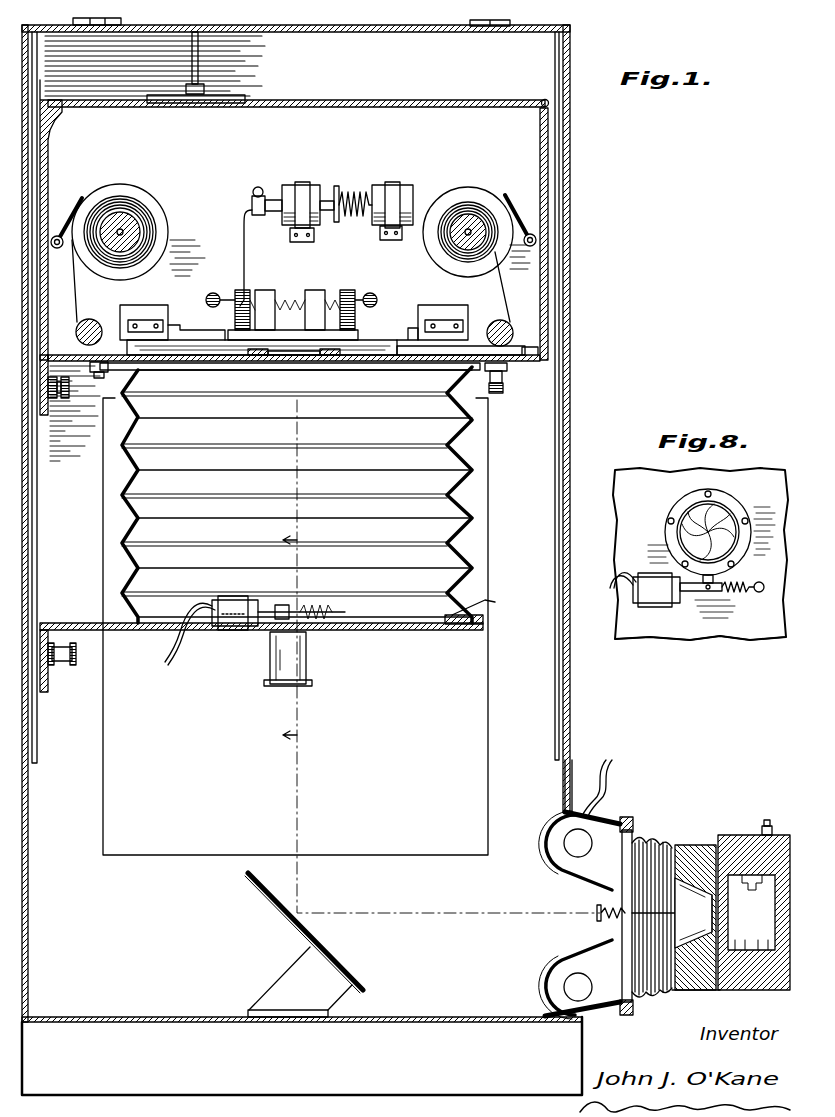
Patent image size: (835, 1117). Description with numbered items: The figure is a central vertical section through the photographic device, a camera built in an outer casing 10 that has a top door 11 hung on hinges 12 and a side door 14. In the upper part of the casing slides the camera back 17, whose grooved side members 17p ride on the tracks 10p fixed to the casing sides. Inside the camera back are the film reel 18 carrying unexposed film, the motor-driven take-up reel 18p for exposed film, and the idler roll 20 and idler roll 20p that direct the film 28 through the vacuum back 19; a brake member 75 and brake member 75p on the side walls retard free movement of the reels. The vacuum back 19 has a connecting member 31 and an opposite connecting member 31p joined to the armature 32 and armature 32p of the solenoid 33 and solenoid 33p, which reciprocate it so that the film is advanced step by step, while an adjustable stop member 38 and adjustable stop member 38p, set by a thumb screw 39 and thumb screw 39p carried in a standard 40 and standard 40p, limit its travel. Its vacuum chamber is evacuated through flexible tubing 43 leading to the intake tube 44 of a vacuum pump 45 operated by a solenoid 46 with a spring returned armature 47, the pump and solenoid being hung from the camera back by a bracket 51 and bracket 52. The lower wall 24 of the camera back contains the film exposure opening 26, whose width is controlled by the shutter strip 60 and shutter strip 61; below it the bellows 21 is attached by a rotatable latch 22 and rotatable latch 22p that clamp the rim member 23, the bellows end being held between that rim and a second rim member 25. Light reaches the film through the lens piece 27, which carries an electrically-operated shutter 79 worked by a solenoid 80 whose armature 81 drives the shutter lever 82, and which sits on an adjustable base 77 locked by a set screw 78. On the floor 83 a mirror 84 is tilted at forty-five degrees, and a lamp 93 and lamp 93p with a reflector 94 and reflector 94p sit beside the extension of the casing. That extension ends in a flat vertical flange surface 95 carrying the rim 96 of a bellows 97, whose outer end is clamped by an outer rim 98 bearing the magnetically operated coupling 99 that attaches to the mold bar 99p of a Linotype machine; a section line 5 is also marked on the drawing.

In FIG. 1, the section line 5 is at (431, 656).
In FIG. 1, the outer casing 10 is at (577, 430).
In FIG. 1, the tracks 10p is at (560, 191).
In FIG. 1, the top door 11 is at (365, 33).
In FIG. 1, the hinges 12 is at (130, 22).
In FIG. 1, the side door 14 is at (103, 724).
In FIG. 1, the camera back 17 is at (530, 151).
In FIG. 1, the grooved side members 17p is at (548, 166).
In FIG. 1, the film reel 18 is at (128, 226).
In FIG. 1, the take-up reel 18p is at (470, 215).
In FIG. 1, the vacuum back 19 is at (180, 365).
In FIG. 1, the idler roll 20 is at (92, 318).
In FIG. 1, the idler roll 20p is at (512, 330).
In FIG. 1, the bellows 21 is at (478, 560).
In FIG. 1, the rotatable latch 22 is at (70, 405).
In FIG. 1, the rotatable latch 22p is at (500, 394).
In FIG. 1, the rim member 23 is at (506, 376).
In FIG. 1, the lower wall 24 is at (540, 352).
In FIG. 1, the second rim member 25 is at (481, 605).
In FIG. 1, the film exposure opening 26 is at (296, 365).
In FIG. 1, the lens piece 27 is at (306, 665).
In FIG. 1, the film 28 is at (508, 270).
In FIG. 1, the connecting member 31 is at (178, 330).
In FIG. 1, the connecting member 31p is at (378, 336).
In FIG. 1, the armature 32 is at (185, 318).
In FIG. 1, the armature 32p is at (412, 318).
In FIG. 1, the solenoid 33 is at (160, 298).
In FIG. 1, the solenoid 33p is at (448, 305).
In FIG. 1, the adjustable stop member 38 is at (268, 290).
In FIG. 1, the adjustable stop member 38p is at (322, 282).
In FIG. 1, the thumb screw 39 is at (213, 292).
In FIG. 1, the thumb screw 39p is at (372, 292).
In FIG. 1, the standard 40 is at (245, 290).
In FIG. 1, the standard 40p is at (350, 290).
In FIG. 1, the flexible tubing 43 is at (240, 220).
In FIG. 1, the intake tube 44 is at (258, 186).
In FIG. 1, the vacuum pump 45 is at (297, 180).
In FIG. 1, the solenoid 46 is at (395, 180).
In FIG. 1, the spring returned armature 47 is at (352, 178).
In FIG. 1, the bracket 51 is at (316, 241).
In FIG. 1, the bracket 52 is at (378, 240).
In FIG. 1, the shutter strip 60 is at (258, 364).
In FIG. 1, the shutter strip 61 is at (335, 365).
In FIG. 1, the brake member 75 is at (100, 190).
In FIG. 1, the brake member 75p is at (515, 205).
In FIG. 1, the adjustable base 77 is at (72, 623).
In FIG. 8, the adjustable base 77 is at (696, 634).
In FIG. 1, the set screw 78 is at (76, 668).
In FIG. 8, the shutter 79 is at (690, 512).
In FIG. 1, the solenoid 80 is at (232, 628).
In FIG. 8, the solenoid 80 is at (658, 605).
In FIG. 1, the armature 81 is at (262, 600).
In FIG. 8, the armature 81 is at (698, 594).
In FIG. 8, the shutter lever 82 is at (714, 598).
In FIG. 1, the floor 83 is at (225, 1005).
In FIG. 1, the mirror 84 is at (292, 918).
In FIG. 1, the lamp 93 is at (575, 852).
In FIG. 1, the lamp 93p is at (576, 989).
In FIG. 1, the reflector 94 is at (570, 880).
In FIG. 1, the reflector 94p is at (565, 956).
In FIG. 1, the flat vertical flange surface 95 is at (625, 1015).
In FIG. 1, the rim 96 is at (632, 826).
In FIG. 1, the bellows 97 is at (658, 843).
In FIG. 1, the outer rim 98 is at (718, 842).
In FIG. 1, the magnetically operated coupling 99 is at (696, 990).
In FIG. 1, the mold bar 99p is at (760, 845).